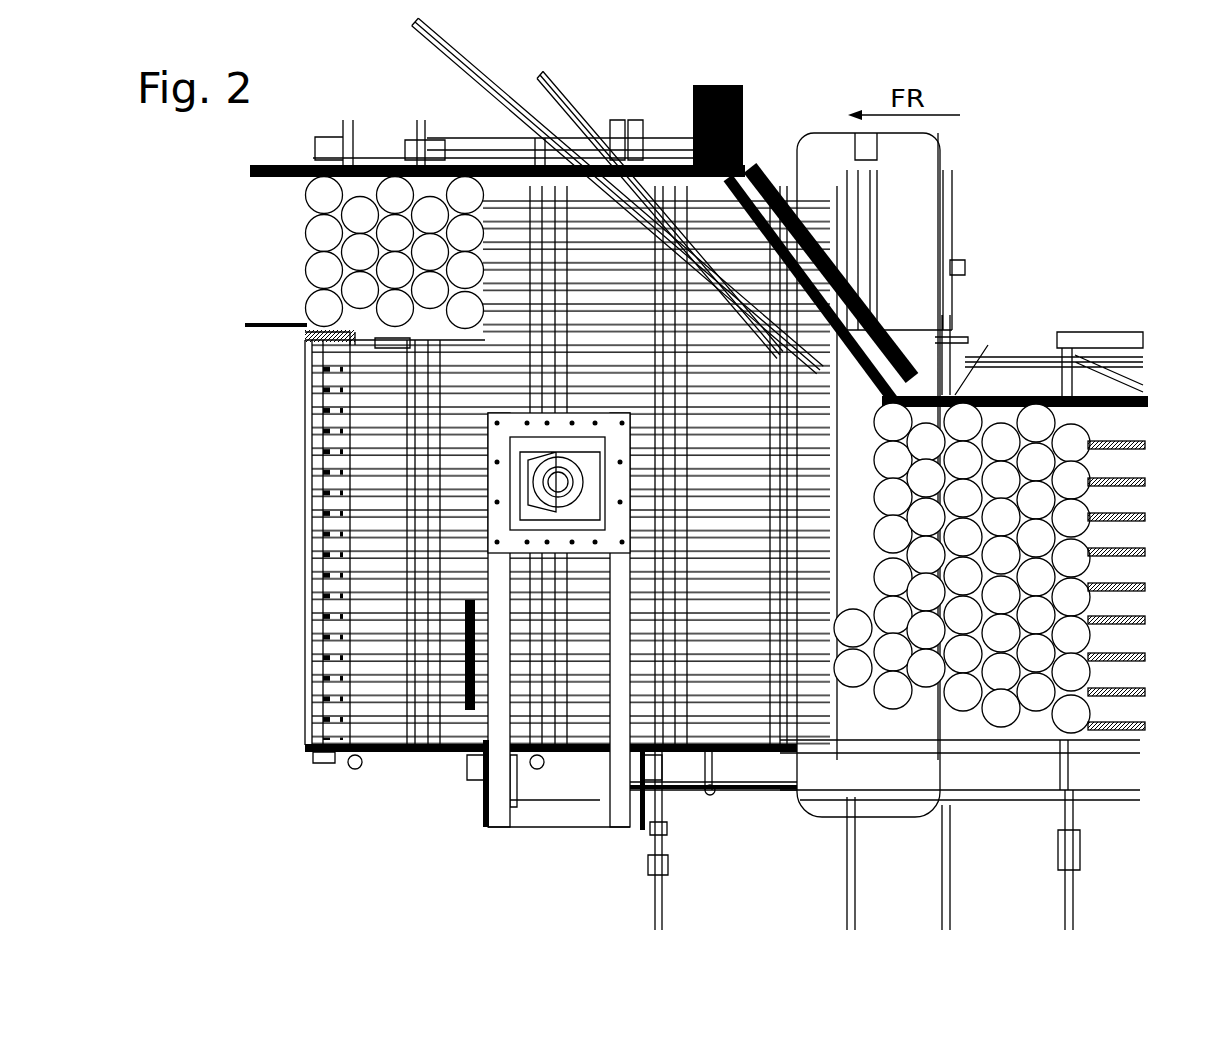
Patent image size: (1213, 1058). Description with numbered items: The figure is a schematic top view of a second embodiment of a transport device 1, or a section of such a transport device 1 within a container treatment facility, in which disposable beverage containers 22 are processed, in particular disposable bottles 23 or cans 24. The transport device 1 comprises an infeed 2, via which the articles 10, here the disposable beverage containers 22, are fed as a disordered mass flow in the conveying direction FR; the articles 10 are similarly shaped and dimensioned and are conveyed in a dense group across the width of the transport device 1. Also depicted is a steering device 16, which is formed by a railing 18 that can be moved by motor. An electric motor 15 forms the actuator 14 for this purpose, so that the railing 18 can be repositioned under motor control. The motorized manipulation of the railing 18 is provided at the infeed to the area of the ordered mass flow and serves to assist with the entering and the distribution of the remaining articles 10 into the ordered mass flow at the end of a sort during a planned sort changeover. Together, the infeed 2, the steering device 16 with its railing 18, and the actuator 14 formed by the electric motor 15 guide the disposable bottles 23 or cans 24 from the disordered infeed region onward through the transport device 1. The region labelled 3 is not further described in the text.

The transport device 1 is at (242, 827).
The infeed 2 is at (1133, 538).
The frame / housing 3 is at (918, 171).
The articles 10 is at (786, 748).
The actuator 14 is at (581, 213).
The electric motor 15 is at (693, 128).
The steering device 16 is at (810, 250).
The railing 18 is at (763, 233).
The disposable beverage containers 22 is at (786, 748).
The disposable bottles 23 is at (786, 748).
The cans 24 is at (850, 670).